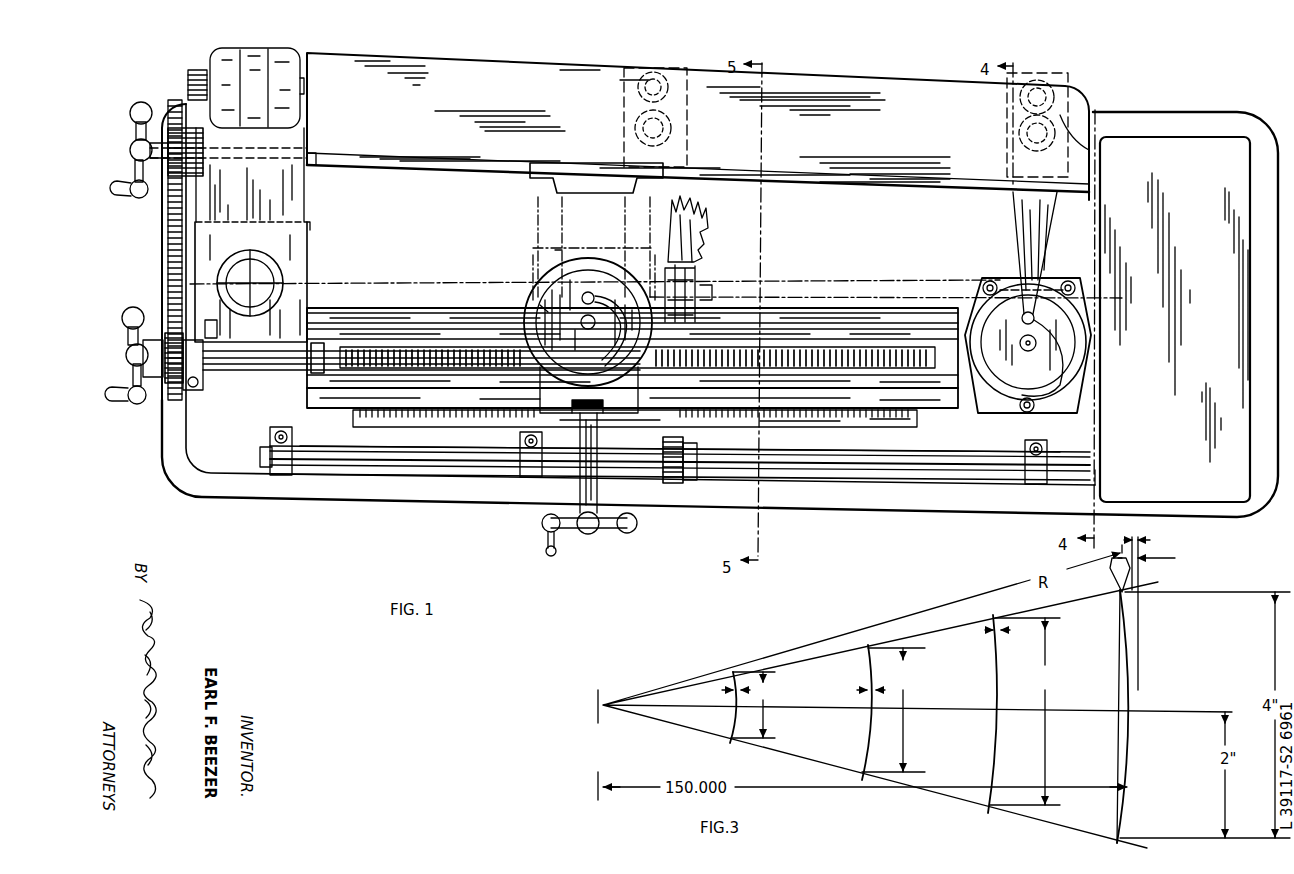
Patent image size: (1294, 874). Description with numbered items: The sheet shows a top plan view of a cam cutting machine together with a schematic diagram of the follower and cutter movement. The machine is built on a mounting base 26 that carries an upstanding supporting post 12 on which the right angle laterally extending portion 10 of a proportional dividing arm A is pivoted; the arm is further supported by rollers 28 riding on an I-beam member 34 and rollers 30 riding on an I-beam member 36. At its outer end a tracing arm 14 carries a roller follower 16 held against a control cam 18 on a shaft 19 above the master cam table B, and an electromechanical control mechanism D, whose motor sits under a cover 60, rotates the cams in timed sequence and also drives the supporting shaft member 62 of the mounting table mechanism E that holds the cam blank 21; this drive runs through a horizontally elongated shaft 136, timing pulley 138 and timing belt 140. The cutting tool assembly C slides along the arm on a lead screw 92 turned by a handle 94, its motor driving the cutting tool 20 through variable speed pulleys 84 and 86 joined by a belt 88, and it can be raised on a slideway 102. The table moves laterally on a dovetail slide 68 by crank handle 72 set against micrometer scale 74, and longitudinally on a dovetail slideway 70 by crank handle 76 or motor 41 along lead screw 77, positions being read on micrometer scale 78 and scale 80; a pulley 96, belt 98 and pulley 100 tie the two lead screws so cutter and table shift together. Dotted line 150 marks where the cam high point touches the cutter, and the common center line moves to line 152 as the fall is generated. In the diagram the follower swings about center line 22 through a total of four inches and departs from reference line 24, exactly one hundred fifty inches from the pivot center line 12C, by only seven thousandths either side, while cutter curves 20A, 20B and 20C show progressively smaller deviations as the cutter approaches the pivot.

In FIG. 1, the right angle laterally extending portion 10 is at (298, 192).
In FIG. 1, the supporting post 12 is at (262, 278).
In FIG. 3, the center line of the post 12C is at (908, 700).
In FIG. 1, the tracing arm 14 is at (1017, 205).
In FIG. 1, the roller follower 16 is at (1038, 327).
In FIG. 3, the roller follower 16 is at (1132, 592).
In FIG. 1, the control cam 18 is at (1036, 369).
In FIG. 1, the shaft 19 is at (1042, 356).
In FIG. 1, the cutting tool 20 is at (589, 292).
In FIG. 3, the cutting tool 20 is at (748, 672).
In FIG. 3, the cutter curve 20A is at (736, 688).
In FIG. 3, the cutter curve 20B is at (870, 642).
In FIG. 3, the cutter curve 20C is at (992, 613).
In FIG. 1, the cam blank 21 is at (540, 305).
In FIG. 3, the center line 22 is at (1185, 700).
In FIG. 3, the reference line 24 is at (1122, 740).
In FIG. 1, the mounting base 26 is at (205, 482).
In FIG. 1, the supporting rollers 28 is at (628, 110).
In FIG. 1, the rollers 30 is at (1072, 102).
In FIG. 1, the I-beam member 34 is at (634, 135).
In FIG. 1, the I-beam member 36 is at (1090, 118).
In FIG. 1, the motor 41 is at (222, 66).
In FIG. 1, the cover 60 is at (1100, 487).
In FIG. 1, the supporting shaft member 62 is at (558, 252).
In FIG. 1, the dovetail slide 68 is at (628, 405).
In FIG. 1, the dovetail slideway 70 is at (853, 405).
In FIG. 1, the crank handle 72 is at (607, 531).
In FIG. 1, the micrometer scale 74 is at (675, 478).
In FIG. 1, the crank handle 76 is at (125, 309).
In FIG. 1, the lead screw 77 is at (462, 350).
In FIG. 1, the micrometer scale 78 is at (318, 343).
In FIG. 1, the scale 80 is at (427, 521).
In FIG. 1, the variable speed pulley 84 is at (706, 224).
In FIG. 1, the variable speed pulley 86 is at (698, 272).
In FIG. 1, the belt 88 is at (714, 296).
In FIG. 1, the lead screw 92 is at (310, 150).
In FIG. 1, the handle 94 is at (126, 196).
In FIG. 1, the pulley 96 is at (153, 382).
In FIG. 1, the belt 98 is at (170, 244).
In FIG. 1, the pulley 100 is at (182, 112).
In FIG. 1, the slideway 102 is at (607, 182).
In FIG. 1, the horizontally elongated shaft 136 is at (922, 483).
In FIG. 1, the timing pulley 138 is at (687, 478).
In FIG. 1, the timing belt 140 is at (695, 447).
In FIG. 1, the dotted line 150 is at (828, 281).
In FIG. 1, the line 152 is at (860, 310).
In FIG. 1, the proportional dividing arm A is at (905, 150).
In FIG. 1, the master cam table B is at (993, 274).
In FIG. 1, the cutting tool assembly C is at (548, 238).
In FIG. 1, the electromechanical control mechanism D is at (1175, 319).
In FIG. 1, the mounting table mechanism E is at (588, 335).